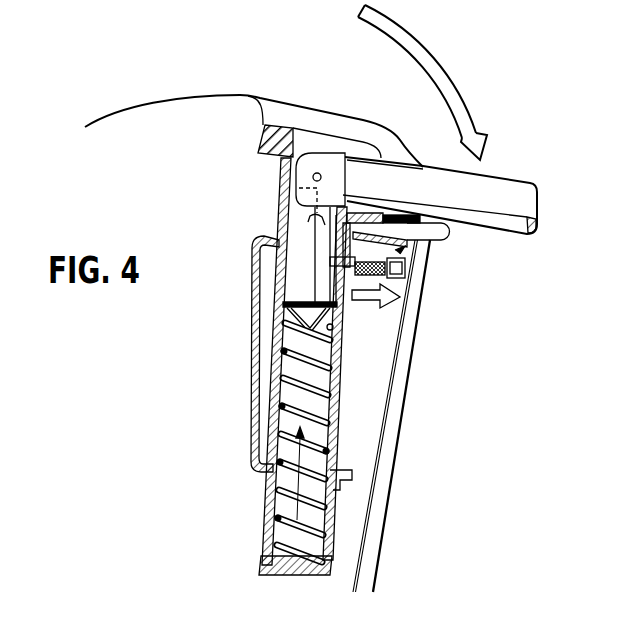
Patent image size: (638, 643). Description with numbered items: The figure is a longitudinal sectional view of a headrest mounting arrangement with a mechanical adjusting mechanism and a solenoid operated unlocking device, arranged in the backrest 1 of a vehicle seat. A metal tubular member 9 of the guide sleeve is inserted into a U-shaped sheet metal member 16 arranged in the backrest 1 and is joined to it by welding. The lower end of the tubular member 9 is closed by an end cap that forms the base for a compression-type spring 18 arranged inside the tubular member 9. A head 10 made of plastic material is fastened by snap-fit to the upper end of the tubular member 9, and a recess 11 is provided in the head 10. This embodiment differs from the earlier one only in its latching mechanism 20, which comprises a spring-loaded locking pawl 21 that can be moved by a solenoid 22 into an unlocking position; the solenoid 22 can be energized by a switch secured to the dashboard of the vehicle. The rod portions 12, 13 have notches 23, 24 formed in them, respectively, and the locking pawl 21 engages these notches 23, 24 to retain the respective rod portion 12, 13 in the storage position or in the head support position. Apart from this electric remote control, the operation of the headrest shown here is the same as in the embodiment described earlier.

The backrest 1 is at (192, 108).
The tubular member 9 is at (266, 508).
The head 10 is at (262, 152).
The recess 11 is at (347, 145).
The rod portion 12 is at (520, 197).
The rod portion 13 is at (292, 298).
The U-shaped sheet metal member 16 is at (254, 423).
The compression-type spring 18 is at (290, 360).
The latching mechanism 20 is at (440, 256).
The locking pawl 21 is at (362, 302).
The solenoid 22 is at (404, 280).
The notch 23 is at (422, 215).
The notch 24 is at (310, 262).